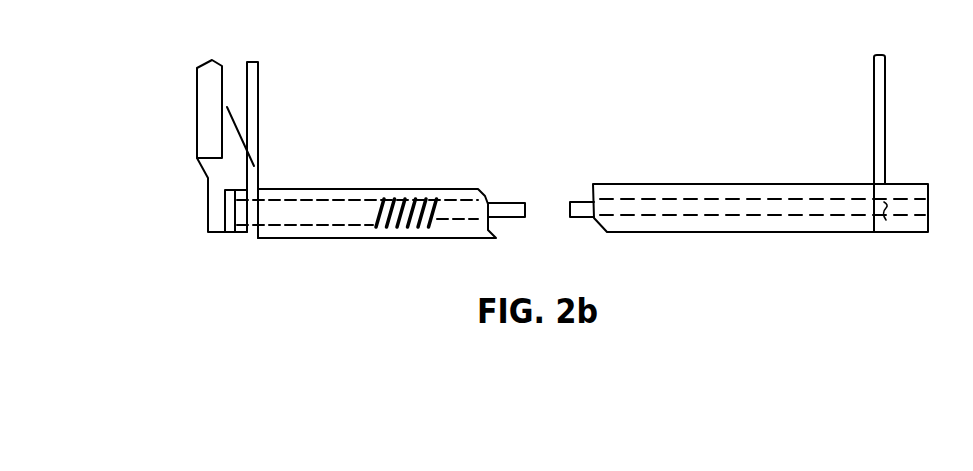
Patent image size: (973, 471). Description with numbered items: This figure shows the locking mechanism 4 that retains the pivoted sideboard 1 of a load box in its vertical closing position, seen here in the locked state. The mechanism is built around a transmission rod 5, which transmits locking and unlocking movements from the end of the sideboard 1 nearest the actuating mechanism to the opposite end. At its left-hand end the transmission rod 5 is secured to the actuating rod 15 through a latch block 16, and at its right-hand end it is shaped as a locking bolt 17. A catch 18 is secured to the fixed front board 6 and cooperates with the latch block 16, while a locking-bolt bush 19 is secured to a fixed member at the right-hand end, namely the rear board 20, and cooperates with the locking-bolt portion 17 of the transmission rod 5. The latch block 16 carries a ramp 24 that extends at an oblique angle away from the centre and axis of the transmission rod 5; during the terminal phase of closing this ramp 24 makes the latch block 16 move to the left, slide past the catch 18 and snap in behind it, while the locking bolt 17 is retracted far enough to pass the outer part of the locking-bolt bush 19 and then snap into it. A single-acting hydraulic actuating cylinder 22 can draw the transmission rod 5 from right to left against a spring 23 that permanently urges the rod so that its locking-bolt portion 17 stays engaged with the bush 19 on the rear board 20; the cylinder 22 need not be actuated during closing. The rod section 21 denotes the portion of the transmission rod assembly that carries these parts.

The sideboard 1 is at (675, 184).
The locking mechanism 4 is at (583, 122).
The transmission rod 5 is at (577, 202).
The front board 6 is at (260, 93).
The actuating rod 15 is at (203, 98).
The latch block 16 is at (208, 178).
The locking bolt 17 is at (886, 220).
The catch 18 is at (243, 238).
The locking-bolt bush 19 is at (913, 184).
The rear board 20 is at (886, 135).
The rod section 21 is at (344, 172).
The hydraulic actuating cylinder 22 is at (301, 218).
The spring 23 is at (406, 238).
The ramp 24 is at (227, 107).